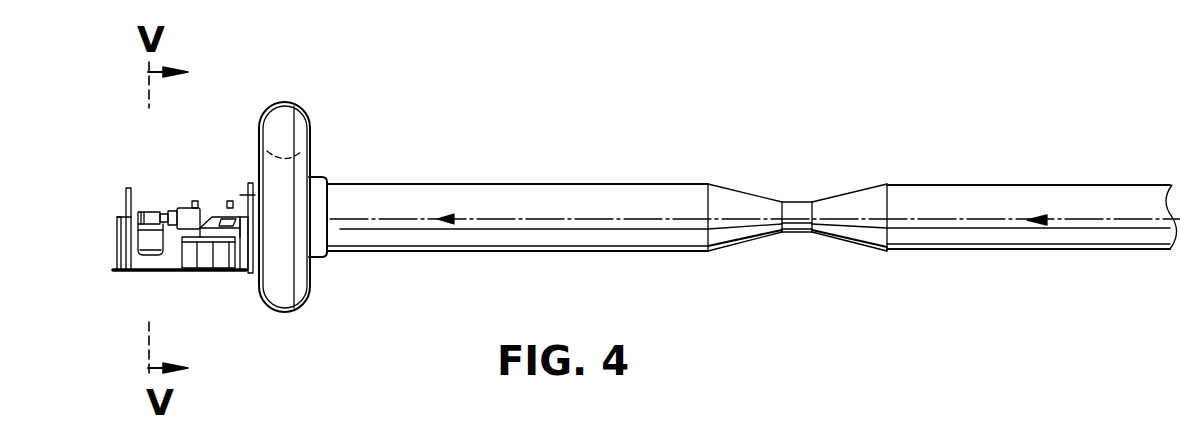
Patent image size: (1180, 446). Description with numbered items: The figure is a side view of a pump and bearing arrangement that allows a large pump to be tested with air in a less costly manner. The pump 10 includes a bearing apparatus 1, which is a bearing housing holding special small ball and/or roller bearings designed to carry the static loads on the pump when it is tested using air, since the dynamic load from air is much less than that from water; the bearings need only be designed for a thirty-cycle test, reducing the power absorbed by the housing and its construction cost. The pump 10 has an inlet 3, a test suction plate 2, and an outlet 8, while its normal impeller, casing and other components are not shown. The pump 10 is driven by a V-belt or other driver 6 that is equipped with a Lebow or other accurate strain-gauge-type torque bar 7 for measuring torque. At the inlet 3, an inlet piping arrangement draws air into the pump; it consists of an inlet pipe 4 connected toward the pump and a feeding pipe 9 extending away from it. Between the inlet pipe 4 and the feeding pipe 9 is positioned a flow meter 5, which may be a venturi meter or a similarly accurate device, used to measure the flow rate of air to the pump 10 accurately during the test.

The bearing apparatus 1 is at (216, 205).
The test suction plate 2 is at (310, 282).
The inlet 3 is at (327, 181).
The inlet pipe 4 is at (604, 184).
The flow meter 5 is at (797, 202).
The driver 6 is at (114, 246).
The torque bar 7 is at (158, 212).
The outlet 8 is at (277, 122).
The feeding pipe 9 is at (1030, 185).
The pump 10 is at (328, 166).